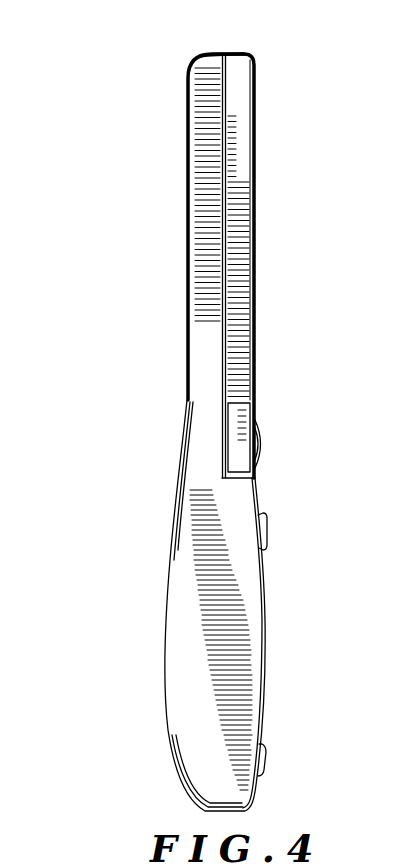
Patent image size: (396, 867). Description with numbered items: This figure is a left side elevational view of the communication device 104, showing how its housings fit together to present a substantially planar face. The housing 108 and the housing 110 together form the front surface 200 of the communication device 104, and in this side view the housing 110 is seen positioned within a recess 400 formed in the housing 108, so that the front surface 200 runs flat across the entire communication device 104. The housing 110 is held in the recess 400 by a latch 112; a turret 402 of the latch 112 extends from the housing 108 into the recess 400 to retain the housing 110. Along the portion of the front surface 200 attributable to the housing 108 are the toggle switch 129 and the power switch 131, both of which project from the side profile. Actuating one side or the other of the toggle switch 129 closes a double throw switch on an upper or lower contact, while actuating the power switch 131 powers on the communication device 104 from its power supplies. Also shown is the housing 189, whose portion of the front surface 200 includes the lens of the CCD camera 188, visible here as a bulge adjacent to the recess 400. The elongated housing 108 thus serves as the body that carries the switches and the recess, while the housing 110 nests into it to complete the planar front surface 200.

The communication device 104 is at (152, 72).
The housing 108 is at (202, 270).
The housing 110 is at (246, 64).
The turret 402 is at (225, 174).
The latch 112 is at (226, 202).
The recess 400 is at (246, 318).
The front surface 200 is at (254, 388).
The housing 189 is at (233, 456).
The CCD camera 188 is at (264, 445).
The toggle switch 129 is at (267, 535).
The power switch 131 is at (264, 757).